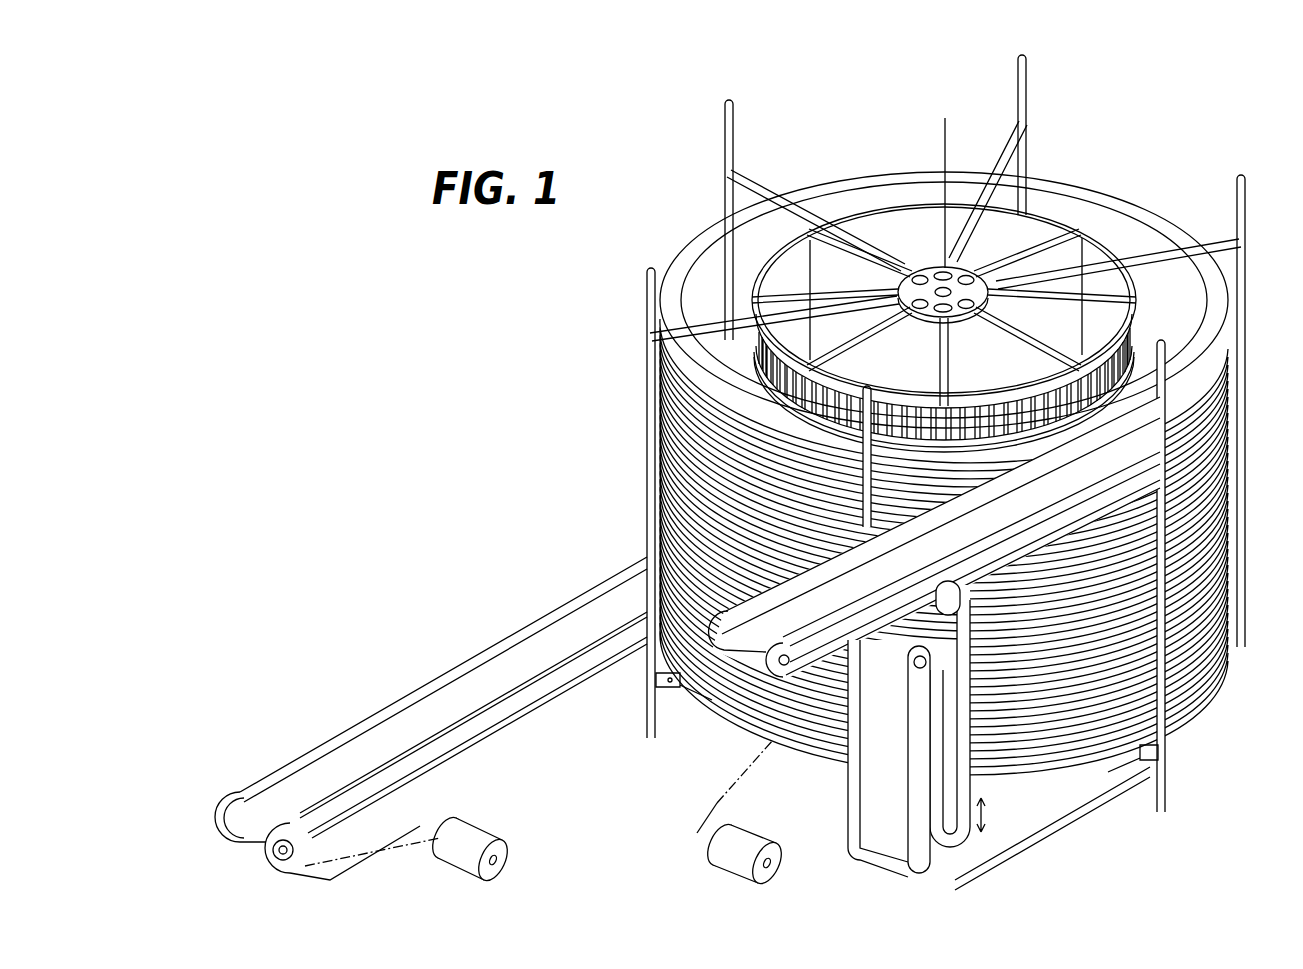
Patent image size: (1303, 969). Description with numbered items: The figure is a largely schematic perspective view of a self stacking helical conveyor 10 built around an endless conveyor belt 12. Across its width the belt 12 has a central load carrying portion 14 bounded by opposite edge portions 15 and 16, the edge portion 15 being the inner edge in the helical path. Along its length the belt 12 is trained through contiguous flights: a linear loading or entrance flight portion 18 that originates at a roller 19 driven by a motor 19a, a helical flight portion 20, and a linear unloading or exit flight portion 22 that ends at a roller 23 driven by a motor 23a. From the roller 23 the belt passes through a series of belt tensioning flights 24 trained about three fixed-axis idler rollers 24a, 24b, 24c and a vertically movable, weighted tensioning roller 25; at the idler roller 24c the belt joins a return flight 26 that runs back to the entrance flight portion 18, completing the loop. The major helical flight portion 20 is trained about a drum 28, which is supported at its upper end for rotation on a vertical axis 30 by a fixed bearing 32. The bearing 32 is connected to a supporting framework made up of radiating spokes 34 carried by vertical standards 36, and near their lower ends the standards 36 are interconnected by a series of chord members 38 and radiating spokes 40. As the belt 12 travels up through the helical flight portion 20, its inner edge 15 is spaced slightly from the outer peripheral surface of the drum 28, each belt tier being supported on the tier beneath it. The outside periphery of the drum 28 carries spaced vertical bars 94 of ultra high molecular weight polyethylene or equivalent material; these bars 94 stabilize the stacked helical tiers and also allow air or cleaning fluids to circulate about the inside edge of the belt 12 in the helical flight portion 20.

The self stacking helical conveyor 10 is at (877, 539).
The endless conveyor belt 12 is at (431, 718).
The central load carrying portion 14 is at (410, 752).
The inner edge portion 15 is at (524, 702).
The edge portion 16 is at (368, 714).
The entrance flight portion 18 is at (468, 681).
The roller 19 is at (300, 838).
The motor 19a is at (476, 832).
The helical flight portion 20 is at (660, 491).
The exit flight portion 22 is at (873, 505).
The roller 23 is at (790, 656).
The motor 23a is at (722, 856).
The belt tensioning flights 24 is at (902, 715).
The idler roller 24a is at (946, 582).
The idler roller 24b is at (914, 668).
The idler roller 24c is at (912, 880).
The tensioning roller 25 is at (948, 808).
The return flight 26 is at (972, 852).
The drum 28 is at (1096, 237).
The vertical axis 30 is at (940, 152).
The fixed bearing 32 is at (972, 280).
The radiating spokes 34 is at (871, 268).
The vertical standards 36 is at (733, 113).
The chord members 38 is at (813, 776).
The radiating spokes 40 is at (681, 692).
The vertical bars 94 is at (944, 412).